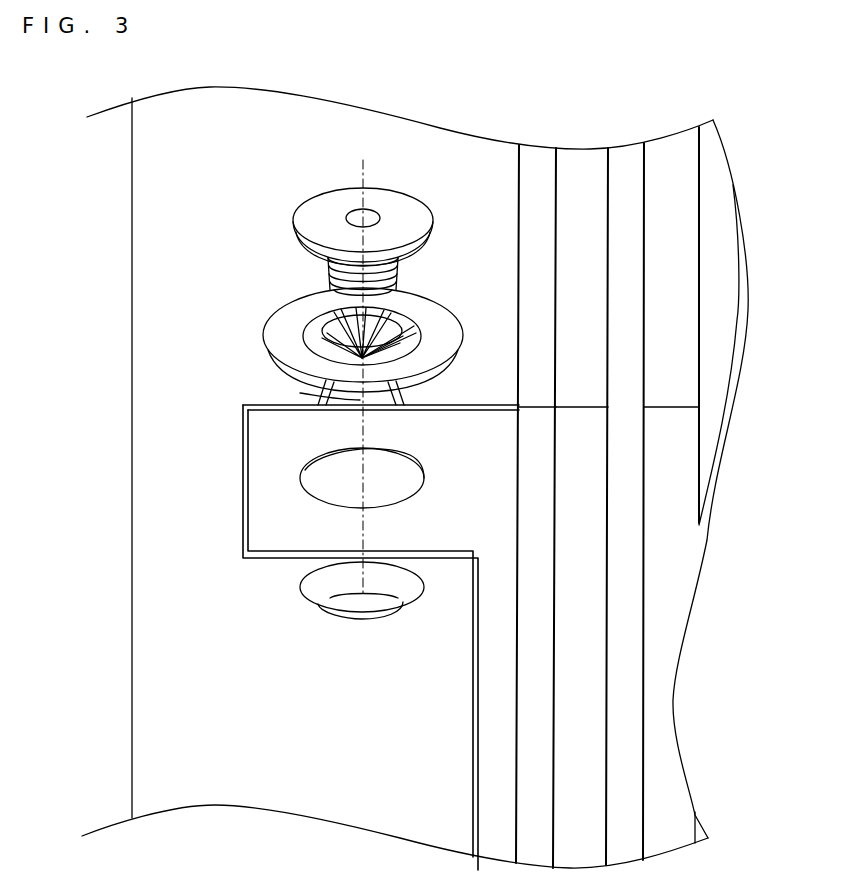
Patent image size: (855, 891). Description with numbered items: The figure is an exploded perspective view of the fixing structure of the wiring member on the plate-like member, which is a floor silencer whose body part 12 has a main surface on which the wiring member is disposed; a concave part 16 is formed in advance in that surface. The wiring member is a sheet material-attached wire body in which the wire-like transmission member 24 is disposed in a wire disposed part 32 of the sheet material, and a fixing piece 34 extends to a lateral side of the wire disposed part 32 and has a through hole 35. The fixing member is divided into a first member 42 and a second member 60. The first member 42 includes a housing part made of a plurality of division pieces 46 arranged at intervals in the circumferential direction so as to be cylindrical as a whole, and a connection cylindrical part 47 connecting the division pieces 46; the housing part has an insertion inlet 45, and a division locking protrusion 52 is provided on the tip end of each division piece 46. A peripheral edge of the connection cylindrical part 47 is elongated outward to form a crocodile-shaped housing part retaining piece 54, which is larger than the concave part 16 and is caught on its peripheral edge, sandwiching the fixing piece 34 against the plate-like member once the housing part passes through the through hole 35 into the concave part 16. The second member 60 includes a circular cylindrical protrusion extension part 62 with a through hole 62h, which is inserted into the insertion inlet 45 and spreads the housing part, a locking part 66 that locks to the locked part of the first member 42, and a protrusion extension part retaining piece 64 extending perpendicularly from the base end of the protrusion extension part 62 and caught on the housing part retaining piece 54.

The body part 12 is at (152, 668).
The concave part 16 is at (353, 616).
The wire-like transmission member 24 is at (622, 160).
The wire disposed part 32 is at (677, 478).
The fixing piece 34 is at (262, 523).
The through hole 35 is at (312, 470).
The first member 42 is at (361, 345).
The insertion inlet 45 is at (388, 313).
The division piece 46 is at (323, 320).
The connection cylindrical part 47 is at (427, 328).
The division locking protrusion 52 is at (335, 398).
The housing part retaining piece 54 is at (275, 332).
The second member 60 is at (376, 183).
The protrusion extension part 62 is at (330, 267).
The through hole 62h is at (357, 210).
The protrusion extension part retaining piece 64 is at (413, 217).
The locking part 66 is at (400, 273).